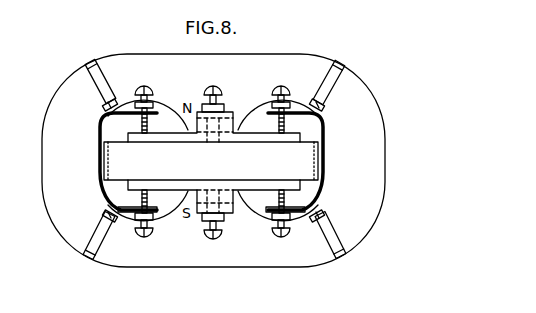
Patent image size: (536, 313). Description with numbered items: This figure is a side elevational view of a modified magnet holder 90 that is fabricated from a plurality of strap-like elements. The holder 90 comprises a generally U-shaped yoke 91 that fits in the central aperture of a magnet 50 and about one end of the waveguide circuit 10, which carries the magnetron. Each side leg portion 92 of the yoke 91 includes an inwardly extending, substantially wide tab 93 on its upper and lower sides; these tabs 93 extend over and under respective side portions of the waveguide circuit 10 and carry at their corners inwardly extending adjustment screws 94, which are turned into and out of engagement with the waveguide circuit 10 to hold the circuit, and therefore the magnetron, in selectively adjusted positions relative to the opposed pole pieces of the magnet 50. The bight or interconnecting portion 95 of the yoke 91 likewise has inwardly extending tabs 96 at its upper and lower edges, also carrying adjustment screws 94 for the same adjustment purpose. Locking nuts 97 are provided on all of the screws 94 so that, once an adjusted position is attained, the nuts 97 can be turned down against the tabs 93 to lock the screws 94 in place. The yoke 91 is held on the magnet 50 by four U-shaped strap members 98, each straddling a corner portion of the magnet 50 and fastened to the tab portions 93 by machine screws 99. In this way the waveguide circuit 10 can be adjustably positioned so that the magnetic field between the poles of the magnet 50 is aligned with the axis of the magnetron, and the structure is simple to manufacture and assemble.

The waveguide circuit 10 is at (248, 140).
The magnet 50 is at (66, 130).
The magnet holder 90 is at (370, 80).
The yoke 91 is at (322, 153).
The side leg portion 92 is at (98, 162).
The tab 93 is at (158, 106).
The adjustment screw 94 is at (155, 125).
The bight portion 95 is at (207, 157).
The tab 96 is at (205, 220).
The locking nut 97 is at (139, 103).
The U-shaped strap member 98 is at (90, 61).
The machine screw 99 is at (106, 106).